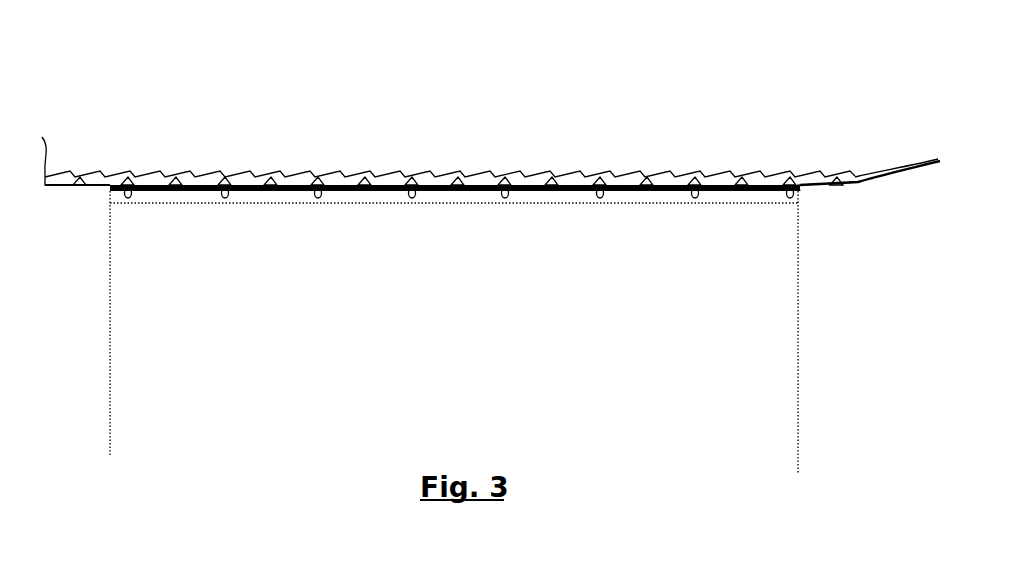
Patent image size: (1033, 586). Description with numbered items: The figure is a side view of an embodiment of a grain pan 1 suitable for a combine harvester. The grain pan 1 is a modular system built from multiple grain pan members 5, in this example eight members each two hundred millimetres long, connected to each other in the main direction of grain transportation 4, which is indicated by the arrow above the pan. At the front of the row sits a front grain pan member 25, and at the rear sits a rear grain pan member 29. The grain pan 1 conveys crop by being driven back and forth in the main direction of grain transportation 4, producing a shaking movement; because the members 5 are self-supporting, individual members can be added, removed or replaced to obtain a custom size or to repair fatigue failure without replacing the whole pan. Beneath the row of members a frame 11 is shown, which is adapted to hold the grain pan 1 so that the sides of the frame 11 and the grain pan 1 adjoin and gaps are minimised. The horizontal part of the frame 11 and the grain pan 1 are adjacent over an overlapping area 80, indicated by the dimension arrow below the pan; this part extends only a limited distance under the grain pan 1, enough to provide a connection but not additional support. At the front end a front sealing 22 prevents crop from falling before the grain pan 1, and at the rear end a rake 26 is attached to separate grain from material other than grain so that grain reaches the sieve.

The grain pan 1 is at (532, 256).
The main direction of grain transportation 4 is at (692, 56).
The grain pan members 5 is at (98, 163).
The frame 11 is at (287, 204).
The front sealing 22 is at (42, 134).
The front grain pan member 25 is at (52, 192).
The rake 26 is at (902, 155).
The rear grain pan member 29 is at (833, 192).
The overlapping area 80 is at (113, 444).